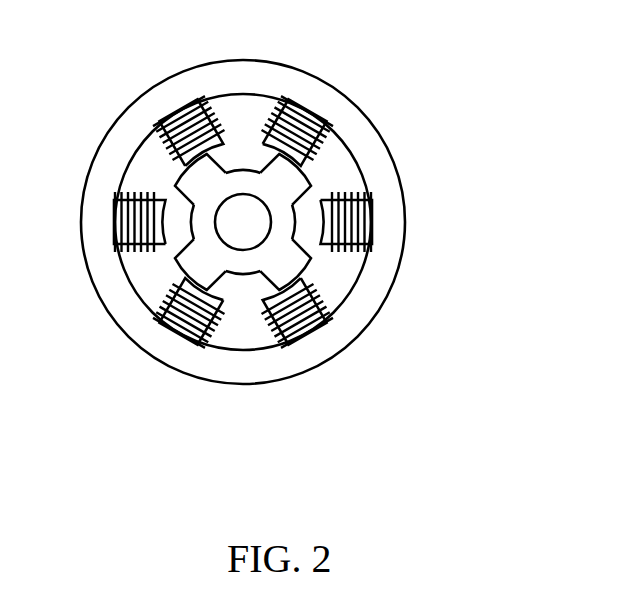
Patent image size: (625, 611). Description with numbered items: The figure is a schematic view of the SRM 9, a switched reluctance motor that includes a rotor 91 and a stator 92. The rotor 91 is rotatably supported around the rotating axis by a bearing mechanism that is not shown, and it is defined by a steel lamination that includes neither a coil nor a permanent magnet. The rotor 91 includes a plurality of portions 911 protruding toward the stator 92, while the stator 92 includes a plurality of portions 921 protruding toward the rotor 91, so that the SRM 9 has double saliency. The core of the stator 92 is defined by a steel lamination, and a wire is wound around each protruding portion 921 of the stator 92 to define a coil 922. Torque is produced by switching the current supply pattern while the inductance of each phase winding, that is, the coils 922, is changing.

The SRM 9 is at (77, 65).
The stator 92 is at (387, 145).
The protruding portion of the stator 921 is at (302, 150).
The coil 922 is at (312, 132).
The rotor 91 is at (282, 226).
The protruding portion of the rotor 911 is at (297, 260).